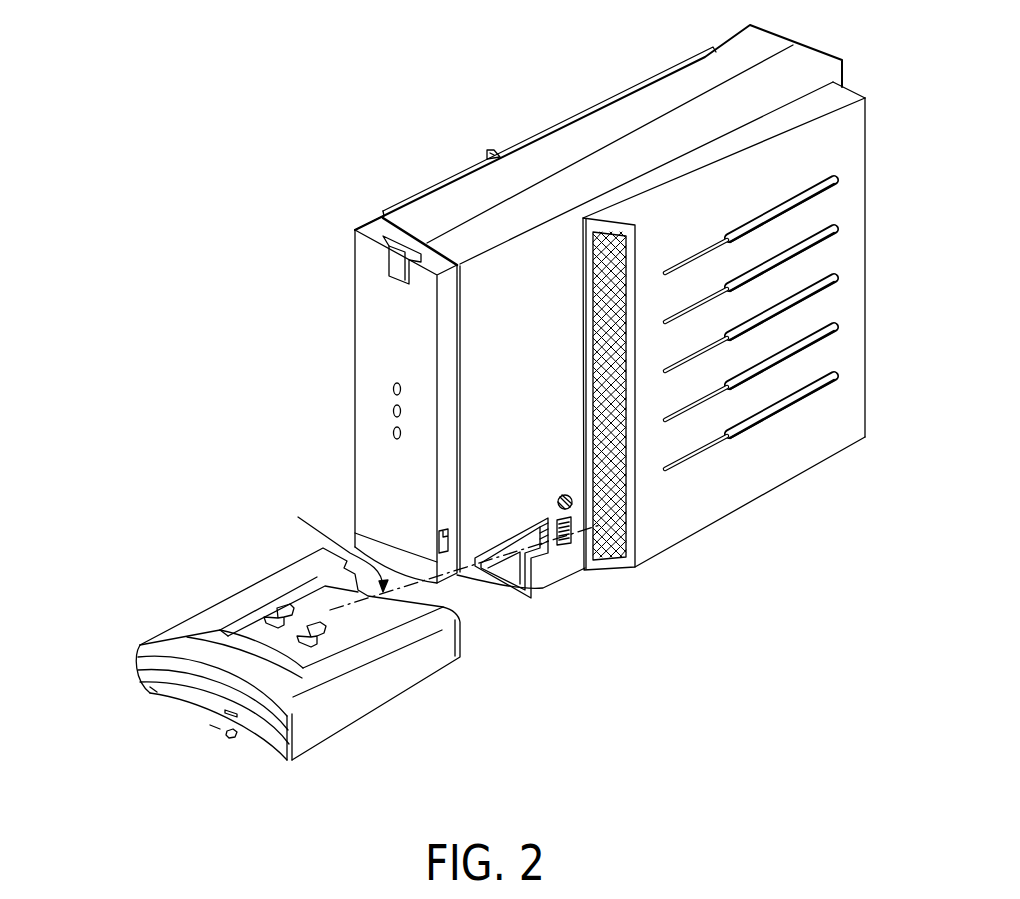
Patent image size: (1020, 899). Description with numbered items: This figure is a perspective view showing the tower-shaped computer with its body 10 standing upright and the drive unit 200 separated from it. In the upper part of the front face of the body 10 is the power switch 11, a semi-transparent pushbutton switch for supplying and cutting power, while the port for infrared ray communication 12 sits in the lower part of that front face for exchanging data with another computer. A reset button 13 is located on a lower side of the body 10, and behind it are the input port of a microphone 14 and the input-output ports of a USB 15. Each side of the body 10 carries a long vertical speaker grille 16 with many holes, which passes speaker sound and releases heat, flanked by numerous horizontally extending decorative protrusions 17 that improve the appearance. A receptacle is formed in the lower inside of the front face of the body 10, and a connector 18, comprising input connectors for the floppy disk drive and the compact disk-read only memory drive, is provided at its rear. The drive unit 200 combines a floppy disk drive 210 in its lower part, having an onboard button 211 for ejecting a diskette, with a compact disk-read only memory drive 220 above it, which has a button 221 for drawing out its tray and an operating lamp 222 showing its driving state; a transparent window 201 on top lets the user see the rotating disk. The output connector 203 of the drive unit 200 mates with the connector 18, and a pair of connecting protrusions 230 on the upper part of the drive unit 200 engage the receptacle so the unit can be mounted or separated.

The body 10 is at (602, 356).
The power switch 11 is at (383, 262).
The port for infrared ray communication 12 is at (372, 545).
The reset button 13 is at (448, 549).
The input port of a microphone 14 is at (572, 506).
The input-output ports of a USB 15 is at (571, 543).
The speaker grille 16 is at (489, 150).
The decorative protrusions 17 is at (838, 231).
The connector 18 is at (500, 562).
The drive unit 200 is at (261, 656).
The transparent window 201 is at (150, 693).
The output connector 203 is at (323, 540).
The floppy disk drive 210 is at (168, 710).
The onboard button 211 is at (230, 738).
The compact disk-read only memory drive 220 is at (148, 657).
The button 221 is at (226, 713).
The operating lamp 222 is at (240, 719).
The connecting protrusions 230 is at (278, 608).